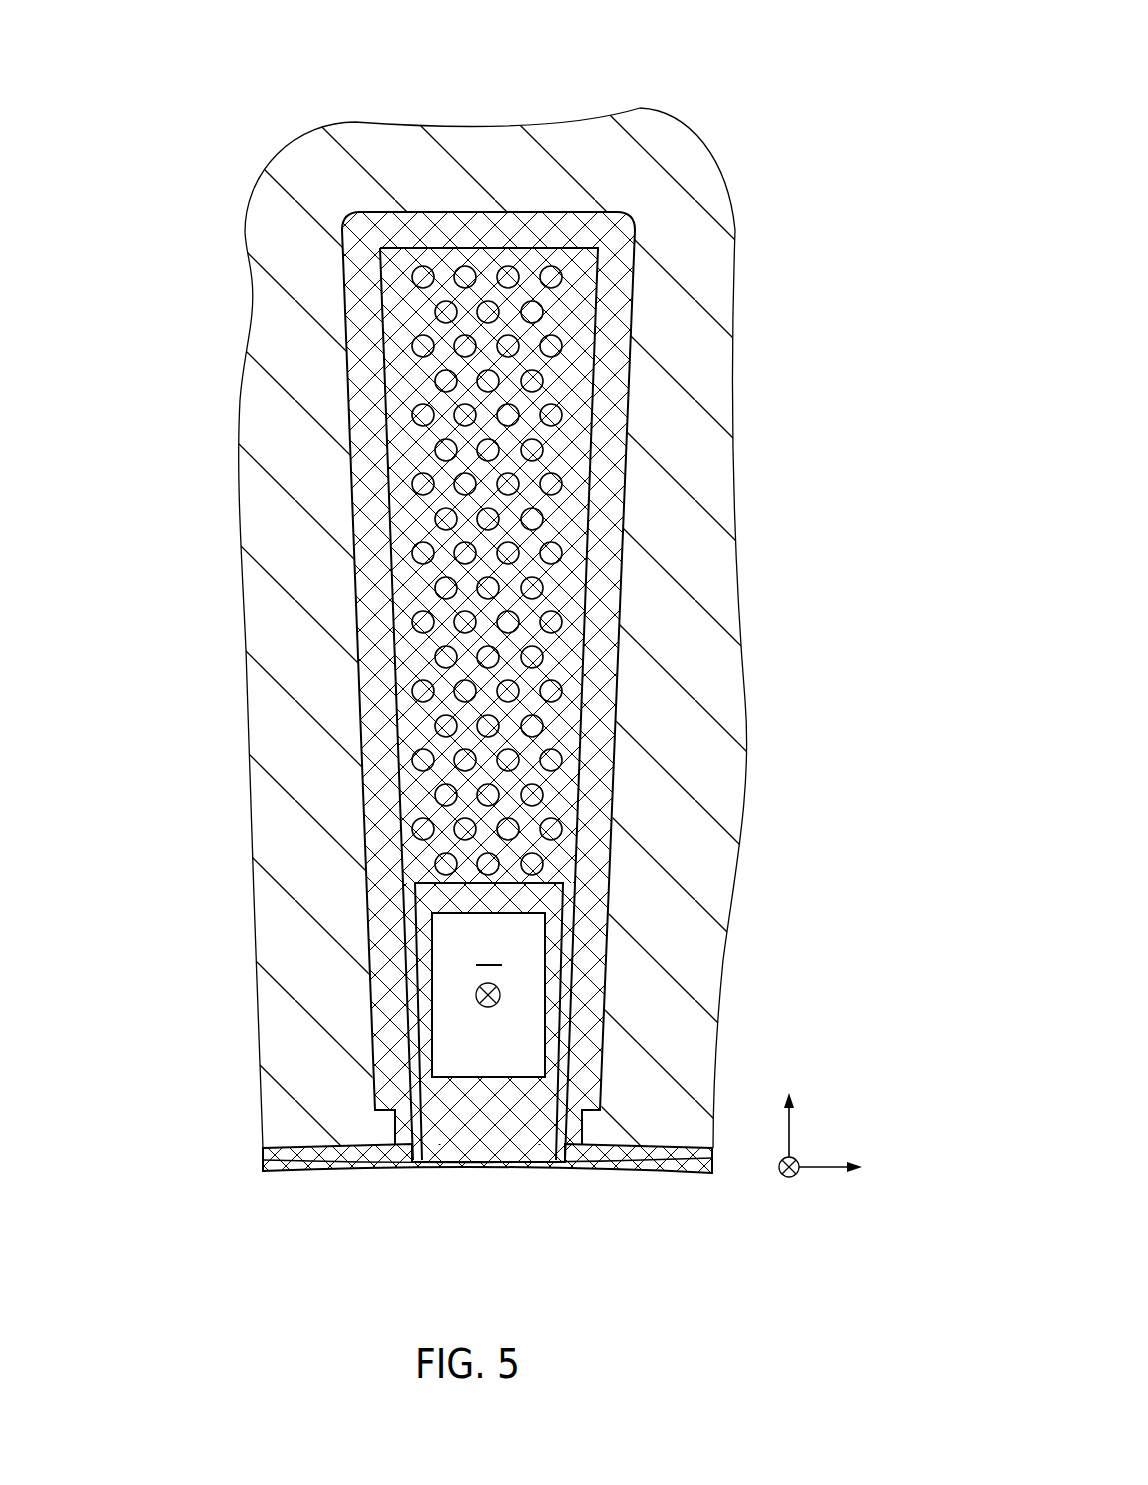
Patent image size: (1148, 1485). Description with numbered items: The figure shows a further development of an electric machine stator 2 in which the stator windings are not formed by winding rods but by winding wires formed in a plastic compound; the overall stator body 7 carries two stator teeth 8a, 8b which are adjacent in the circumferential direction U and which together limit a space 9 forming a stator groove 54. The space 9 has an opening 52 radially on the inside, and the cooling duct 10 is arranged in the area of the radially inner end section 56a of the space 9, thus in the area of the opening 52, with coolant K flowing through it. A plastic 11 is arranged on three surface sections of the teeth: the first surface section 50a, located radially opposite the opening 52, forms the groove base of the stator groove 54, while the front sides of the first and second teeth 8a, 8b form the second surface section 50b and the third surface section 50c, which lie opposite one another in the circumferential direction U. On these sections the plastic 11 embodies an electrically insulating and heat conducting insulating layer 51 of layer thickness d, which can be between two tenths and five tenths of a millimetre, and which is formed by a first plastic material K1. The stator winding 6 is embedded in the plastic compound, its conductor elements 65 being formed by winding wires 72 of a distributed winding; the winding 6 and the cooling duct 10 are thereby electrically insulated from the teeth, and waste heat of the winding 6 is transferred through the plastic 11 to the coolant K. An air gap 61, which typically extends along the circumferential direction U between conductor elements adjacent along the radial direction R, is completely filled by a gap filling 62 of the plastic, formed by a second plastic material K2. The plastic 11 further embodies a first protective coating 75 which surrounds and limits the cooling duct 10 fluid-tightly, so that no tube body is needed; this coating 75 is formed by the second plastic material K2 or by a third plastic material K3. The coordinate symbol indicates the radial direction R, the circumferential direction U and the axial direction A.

The device 2 is at (838, 166).
The housing / body 7 is at (688, 127).
The first stator tooth 8a is at (218, 513).
The second stator tooth 8b is at (745, 505).
The plastic 11 is at (447, 228).
The insulating layer 51 is at (491, 618).
The first plastic material K1 is at (491, 618).
The first surface section 50a is at (540, 222).
The second surface section 50b is at (366, 745).
The third surface section 50c is at (612, 740).
The stator winding 6 is at (484, 244).
The conductor elements 65 is at (615, 570).
The winding wires 72 is at (557, 347).
The second plastic material K2 is at (545, 572).
The air gap 61 is at (400, 945).
The gap filling 62 is at (400, 1003).
The cooling duct 10 is at (488, 995).
The coolant K is at (493, 1010).
The radially inner end section 56a is at (308, 1066).
The layer thickness d is at (377, 1115).
The space 9 is at (461, 1236).
The stator groove 54 is at (452, 1182).
The opening 52 is at (494, 1165).
The first protective coating 75 is at (487, 1187).
The third plastic material K3 is at (535, 1138).
The radial direction R is at (793, 1130).
The axial direction A is at (785, 1180).
The circumferential direction U is at (827, 1174).